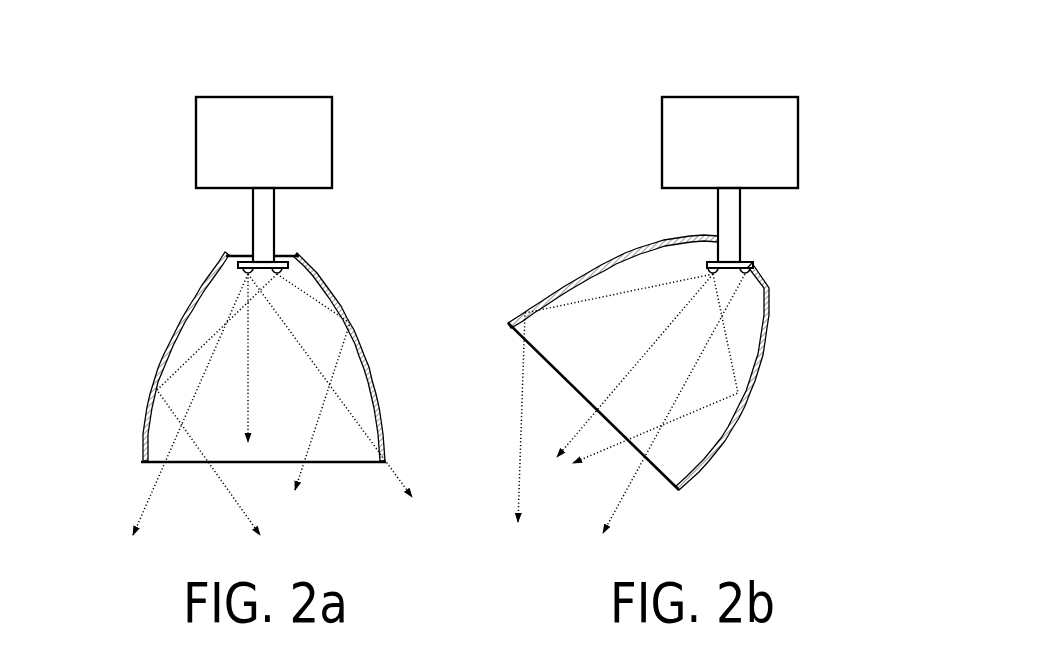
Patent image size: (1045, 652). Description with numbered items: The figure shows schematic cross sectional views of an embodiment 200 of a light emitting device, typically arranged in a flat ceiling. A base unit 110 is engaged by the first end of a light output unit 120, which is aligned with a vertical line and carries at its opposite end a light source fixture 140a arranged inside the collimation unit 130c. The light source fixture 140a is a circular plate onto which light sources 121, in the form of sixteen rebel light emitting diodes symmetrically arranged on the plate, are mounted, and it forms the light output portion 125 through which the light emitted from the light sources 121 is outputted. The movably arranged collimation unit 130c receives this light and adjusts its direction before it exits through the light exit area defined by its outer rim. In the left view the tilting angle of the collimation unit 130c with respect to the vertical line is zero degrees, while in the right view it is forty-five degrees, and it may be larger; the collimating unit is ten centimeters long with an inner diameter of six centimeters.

In FIG. 2a, the light emitting device embodiment 200 is at (346, 70).
In FIG. 2b, the light emitting device embodiment 200 is at (813, 72).
In FIG. 2a, the base unit 110 is at (322, 143).
In FIG. 2b, the base unit 110 is at (787, 145).
In FIG. 2a, the light output unit 120 is at (250, 207).
In FIG. 2b, the light output unit 120 is at (716, 207).
In FIG. 2a, the light source 121 is at (240, 278).
In FIG. 2b, the light source 121 is at (707, 278).
In FIG. 2a, the light output surface 125 is at (260, 286).
In FIG. 2b, the light output surface 125 is at (728, 286).
In FIG. 2a, the collimation unit 130c is at (140, 418).
In FIG. 2b, the collimation unit 130c is at (552, 277).
In FIG. 2a, the light source fixture 140a is at (276, 252).
In FIG. 2b, the light source fixture 140a is at (742, 250).